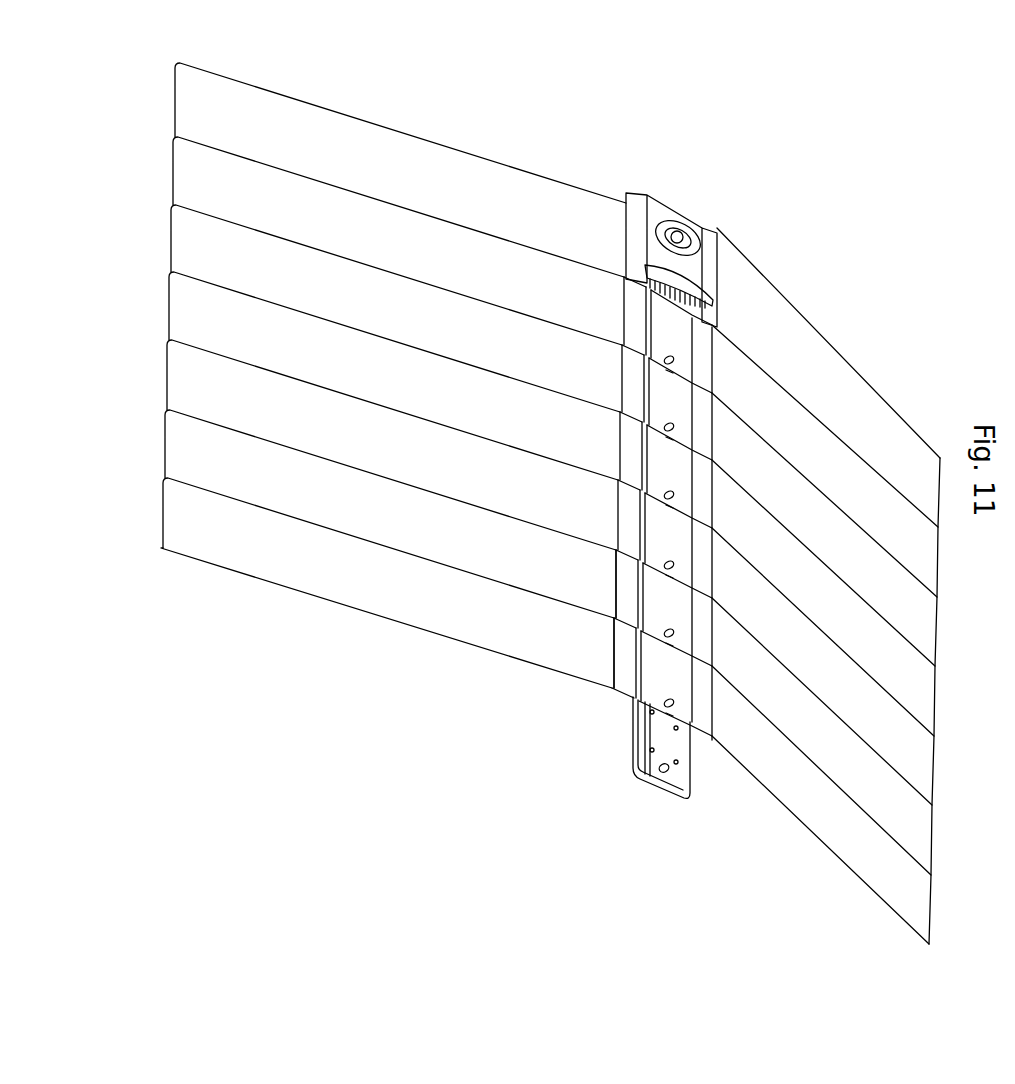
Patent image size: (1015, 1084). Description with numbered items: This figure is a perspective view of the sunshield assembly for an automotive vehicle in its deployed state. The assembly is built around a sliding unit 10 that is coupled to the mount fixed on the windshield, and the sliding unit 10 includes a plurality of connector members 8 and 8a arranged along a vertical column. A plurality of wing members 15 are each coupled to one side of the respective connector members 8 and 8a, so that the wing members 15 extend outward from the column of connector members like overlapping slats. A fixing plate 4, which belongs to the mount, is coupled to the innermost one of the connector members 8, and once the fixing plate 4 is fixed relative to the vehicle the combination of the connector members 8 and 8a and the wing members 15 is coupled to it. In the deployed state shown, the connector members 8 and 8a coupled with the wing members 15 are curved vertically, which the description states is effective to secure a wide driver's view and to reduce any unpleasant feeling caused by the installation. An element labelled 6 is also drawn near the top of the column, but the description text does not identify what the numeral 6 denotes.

The fixing plate 4 is at (632, 750).
The lens unit 6 is at (678, 215).
The connector member 8 is at (627, 647).
The connector member 8a is at (617, 588).
The sliding unit 10 is at (716, 419).
The wing member 15 is at (287, 498).